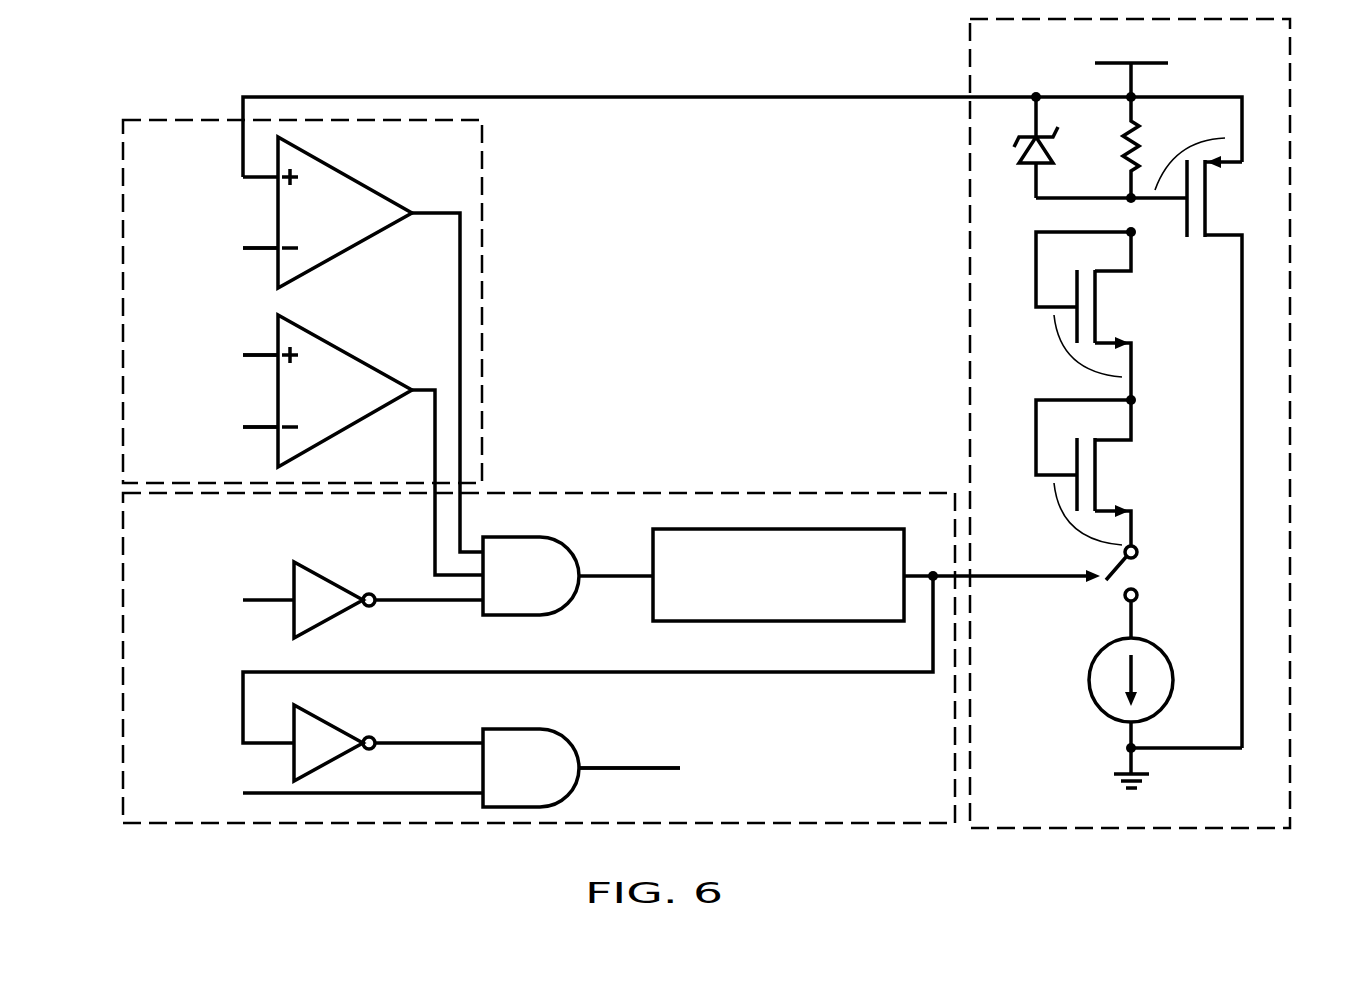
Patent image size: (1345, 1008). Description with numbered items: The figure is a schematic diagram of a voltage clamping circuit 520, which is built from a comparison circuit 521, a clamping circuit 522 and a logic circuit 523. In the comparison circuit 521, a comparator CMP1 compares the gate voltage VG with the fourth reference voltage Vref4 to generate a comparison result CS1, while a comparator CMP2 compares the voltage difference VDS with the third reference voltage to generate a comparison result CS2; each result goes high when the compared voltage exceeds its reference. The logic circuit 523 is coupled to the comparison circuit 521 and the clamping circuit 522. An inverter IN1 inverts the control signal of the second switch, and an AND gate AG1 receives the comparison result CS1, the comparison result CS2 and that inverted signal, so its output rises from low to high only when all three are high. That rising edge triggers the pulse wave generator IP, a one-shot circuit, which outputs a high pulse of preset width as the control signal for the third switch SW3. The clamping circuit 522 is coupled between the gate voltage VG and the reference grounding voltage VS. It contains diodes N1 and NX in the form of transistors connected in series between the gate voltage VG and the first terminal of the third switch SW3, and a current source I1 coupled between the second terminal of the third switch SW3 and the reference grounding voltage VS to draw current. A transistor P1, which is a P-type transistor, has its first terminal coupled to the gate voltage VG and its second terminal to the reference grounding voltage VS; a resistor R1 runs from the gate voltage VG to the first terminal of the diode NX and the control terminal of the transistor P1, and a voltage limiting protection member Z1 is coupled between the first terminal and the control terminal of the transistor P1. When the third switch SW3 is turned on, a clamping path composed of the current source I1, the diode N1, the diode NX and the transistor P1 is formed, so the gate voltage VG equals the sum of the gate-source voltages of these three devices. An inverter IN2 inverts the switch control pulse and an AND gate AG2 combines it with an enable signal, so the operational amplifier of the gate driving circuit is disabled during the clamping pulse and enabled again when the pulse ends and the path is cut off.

The voltage clamping circuit 520 is at (1344, 893).
The comparison circuit 521 is at (190, 118).
The clamping circuit 522 is at (1184, 829).
The logic circuit 523 is at (763, 492).
The comparator CMP1 is at (327, 212).
The comparator CMP2 is at (327, 391).
The comparison result CS1 is at (420, 211).
The comparison result CS2 is at (420, 389).
The fourth reference voltage Vref4 is at (226, 249).
The voltage difference VDS is at (233, 356).
The inverter IN1 is at (326, 578).
The inverter IN2 is at (326, 721).
The AND gate AG1 is at (558, 543).
The AND gate AG2 is at (558, 735).
The pulse wave generator IP is at (807, 622).
The gate voltage VG is at (1131, 59).
The voltage limiting protection member Z1 is at (1021, 147).
The resistor R1 is at (1115, 147).
The transistor P1 is at (1228, 452).
The diode NX is at (1102, 316).
The diode N1 is at (1099, 473).
The third switch SW3 is at (1155, 592).
The current source I1 is at (1173, 652).
The reference grounding voltage VS is at (1131, 801).